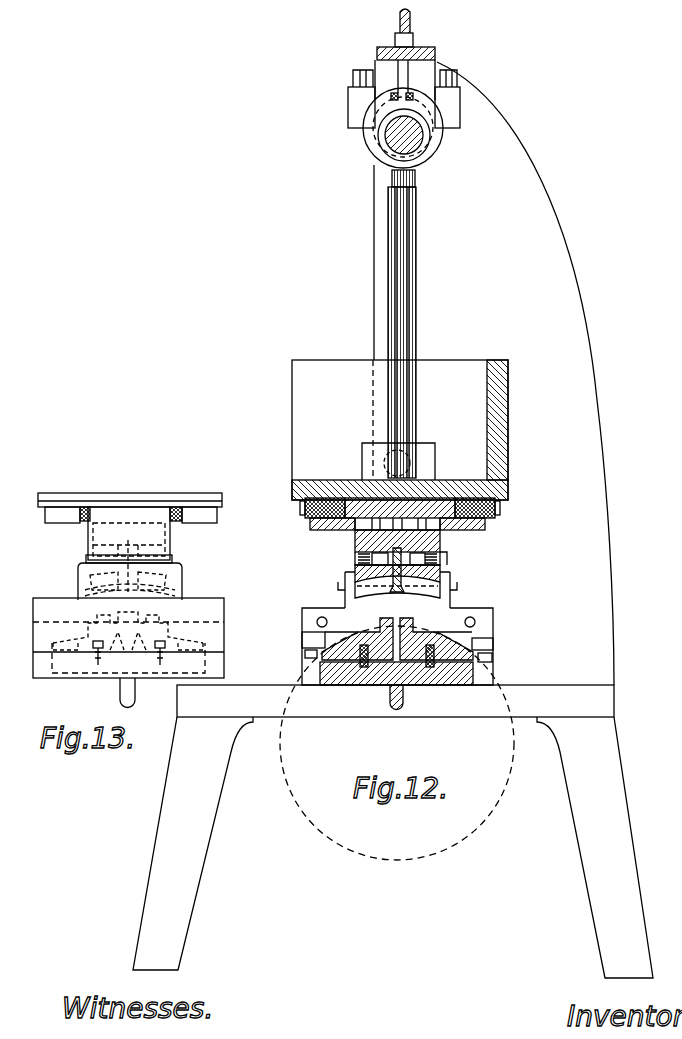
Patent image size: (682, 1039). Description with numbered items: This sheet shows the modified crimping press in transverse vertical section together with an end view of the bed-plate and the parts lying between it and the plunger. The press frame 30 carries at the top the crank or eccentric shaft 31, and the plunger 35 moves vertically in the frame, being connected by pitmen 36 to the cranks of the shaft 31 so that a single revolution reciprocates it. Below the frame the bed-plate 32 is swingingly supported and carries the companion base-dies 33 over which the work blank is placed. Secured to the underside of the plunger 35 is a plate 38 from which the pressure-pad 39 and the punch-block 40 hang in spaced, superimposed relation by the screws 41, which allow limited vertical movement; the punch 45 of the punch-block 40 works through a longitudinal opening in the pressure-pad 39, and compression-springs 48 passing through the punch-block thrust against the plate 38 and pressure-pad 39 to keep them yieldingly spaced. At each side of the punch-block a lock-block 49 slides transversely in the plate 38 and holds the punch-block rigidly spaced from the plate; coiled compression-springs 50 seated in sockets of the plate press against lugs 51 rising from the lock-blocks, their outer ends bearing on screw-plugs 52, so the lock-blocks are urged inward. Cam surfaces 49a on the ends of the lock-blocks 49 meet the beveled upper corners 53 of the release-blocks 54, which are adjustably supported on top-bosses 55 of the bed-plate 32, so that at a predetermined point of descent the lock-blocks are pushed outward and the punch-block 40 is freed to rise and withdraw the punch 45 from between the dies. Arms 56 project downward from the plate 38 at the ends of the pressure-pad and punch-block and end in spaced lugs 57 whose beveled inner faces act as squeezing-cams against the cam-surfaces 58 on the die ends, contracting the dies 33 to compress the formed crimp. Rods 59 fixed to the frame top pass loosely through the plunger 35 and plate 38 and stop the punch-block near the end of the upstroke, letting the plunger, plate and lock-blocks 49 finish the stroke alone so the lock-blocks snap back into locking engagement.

In FIG. 12, the press frame 30 is at (393, 520).
In FIG. 12, the crank or eccentric shaft 31 is at (432, 97).
In FIG. 12, the bed-plate 32 is at (345, 680).
In FIG. 13, the bed-plate 32 is at (75, 668).
In FIG. 12, the companion base-dies 33 is at (380, 624).
In FIG. 12, the plunger 35 is at (335, 472).
In FIG. 12, the pitmen 36 is at (414, 301).
In FIG. 12, the plate 38 is at (411, 500).
In FIG. 13, the plate 38 is at (125, 483).
In FIG. 12, the pressure-pad 39 is at (437, 582).
In FIG. 13, the pressure-pad 39 is at (173, 561).
In FIG. 12, the punch-block 40 is at (442, 548).
In FIG. 13, the punch-block 40 is at (170, 542).
In FIG. 12, the screws 41 is at (472, 562).
In FIG. 12, the punch 45 is at (397, 594).
In FIG. 12, the compression-springs 48 is at (358, 558).
In FIG. 12, the lock-blocks 49 is at (318, 528).
In FIG. 13, the lock-blocks 49 is at (125, 529).
In FIG. 13, the cam surfaces 49a is at (180, 515).
In FIG. 12, the coiled compression-springs 50 is at (490, 505).
In FIG. 12, the lugs 51 is at (457, 500).
In FIG. 12, the screw-plugs 52 is at (305, 510).
In FIG. 12, the beveled upper corners 53 is at (345, 587).
In FIG. 12, the release-blocks 54 is at (345, 600).
In FIG. 13, the release-blocks 54 is at (78, 585).
In FIG. 12, the top-bosses 55 is at (303, 668).
In FIG. 13, the top-bosses 55 is at (36, 636).
In FIG. 13, the arms 56 is at (129, 557).
In FIG. 12, the lugs (squeezing-cams) 57 is at (412, 150).
In FIG. 13, the lugs (squeezing-cams) 57 is at (90, 580).
In FIG. 12, the cam-surfaces 58 is at (363, 672).
In FIG. 13, the cam-surfaces 58 is at (129, 674).
In FIG. 12, the rods (stop-rods) 59 is at (402, 336).